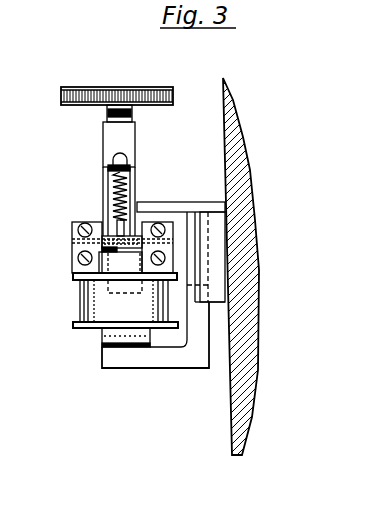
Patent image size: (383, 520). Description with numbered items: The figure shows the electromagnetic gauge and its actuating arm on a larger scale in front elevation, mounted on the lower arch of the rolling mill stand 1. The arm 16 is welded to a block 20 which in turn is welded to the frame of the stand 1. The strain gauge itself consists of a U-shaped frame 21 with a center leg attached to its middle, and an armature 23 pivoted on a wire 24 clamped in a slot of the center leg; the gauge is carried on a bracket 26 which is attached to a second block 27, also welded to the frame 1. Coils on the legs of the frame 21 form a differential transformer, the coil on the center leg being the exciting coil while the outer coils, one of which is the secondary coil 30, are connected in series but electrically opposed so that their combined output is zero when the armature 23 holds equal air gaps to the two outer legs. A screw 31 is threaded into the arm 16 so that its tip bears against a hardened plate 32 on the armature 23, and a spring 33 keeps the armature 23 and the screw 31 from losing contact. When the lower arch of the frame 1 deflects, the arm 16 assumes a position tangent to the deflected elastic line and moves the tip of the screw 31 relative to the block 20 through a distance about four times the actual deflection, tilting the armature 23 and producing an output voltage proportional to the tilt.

The rolling mill stand 1 is at (230, 404).
The screw 31 is at (173, 94).
The arm 16 is at (136, 142).
The spring 33 is at (113, 178).
The hardened plate 32 is at (104, 228).
The wire 24 is at (72, 238).
The armature 23 is at (104, 249).
The block 20 is at (178, 202).
The block 27 is at (213, 236).
The secondary coil 30 is at (125, 304).
The U-shaped frame 21 is at (102, 342).
The bracket 26 is at (153, 370).